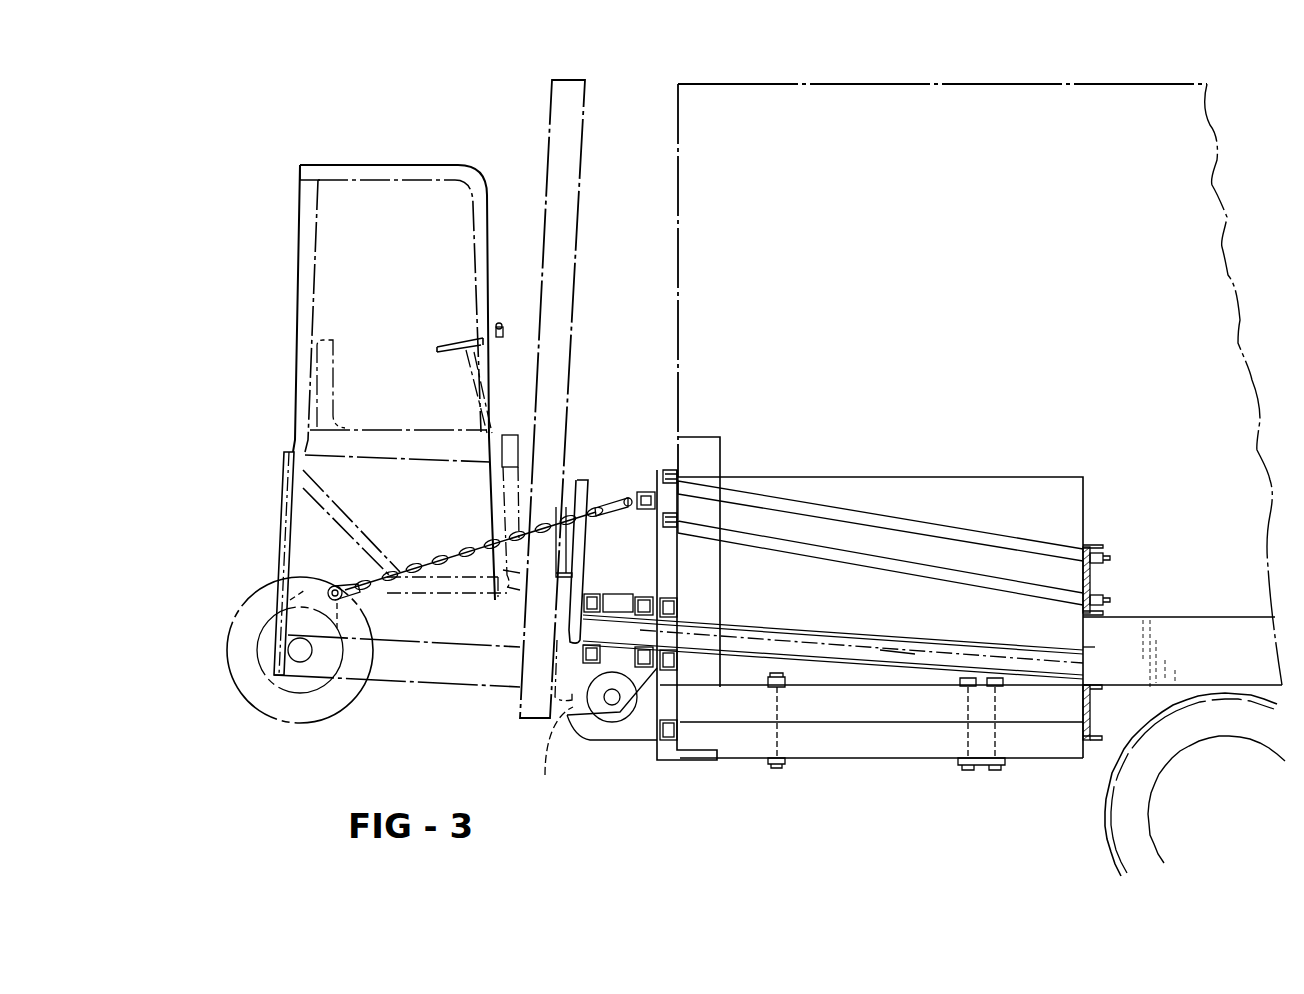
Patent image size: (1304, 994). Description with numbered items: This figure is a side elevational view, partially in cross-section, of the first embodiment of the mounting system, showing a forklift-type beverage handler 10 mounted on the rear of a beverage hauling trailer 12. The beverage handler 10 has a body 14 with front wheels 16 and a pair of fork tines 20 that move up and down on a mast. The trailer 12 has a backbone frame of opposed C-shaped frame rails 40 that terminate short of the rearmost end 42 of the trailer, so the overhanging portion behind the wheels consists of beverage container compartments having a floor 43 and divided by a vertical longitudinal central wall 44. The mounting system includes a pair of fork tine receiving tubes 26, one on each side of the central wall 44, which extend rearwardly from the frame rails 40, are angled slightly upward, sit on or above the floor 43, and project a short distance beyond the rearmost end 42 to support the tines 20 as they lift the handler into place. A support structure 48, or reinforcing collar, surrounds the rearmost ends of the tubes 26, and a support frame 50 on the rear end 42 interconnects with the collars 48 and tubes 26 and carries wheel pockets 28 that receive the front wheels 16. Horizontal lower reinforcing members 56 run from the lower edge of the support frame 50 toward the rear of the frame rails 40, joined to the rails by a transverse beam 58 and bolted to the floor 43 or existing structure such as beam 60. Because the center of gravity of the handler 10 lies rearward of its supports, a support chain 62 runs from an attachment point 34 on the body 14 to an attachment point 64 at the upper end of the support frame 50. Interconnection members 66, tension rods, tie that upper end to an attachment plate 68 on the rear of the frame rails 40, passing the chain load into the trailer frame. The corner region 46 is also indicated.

The beverage handler 10 is at (285, 310).
The trailer 12 is at (1172, 74).
The body 14 is at (297, 503).
The front wheels 16 is at (553, 752).
The fork tines 20 is at (738, 642).
The fork tine receiving tubes 26 is at (824, 630).
The wheel pockets 28 is at (620, 730).
The attachment point 34 is at (336, 587).
The frame rails 40 is at (1222, 625).
The rearmost end 42 is at (678, 337).
The floor 43 is at (893, 687).
The central wall 44 is at (948, 478).
The corner joint 46 is at (1087, 647).
The support structure 48 is at (589, 594).
The support frame 50 is at (678, 703).
The lower reinforcing members 56 is at (796, 760).
The transverse beam 58 is at (1088, 717).
The beam 60 is at (905, 742).
The support chain 62 is at (470, 558).
The attachment point 64 is at (621, 496).
The interconnection members 66 is at (838, 498).
The attachment plate 68 is at (1090, 540).